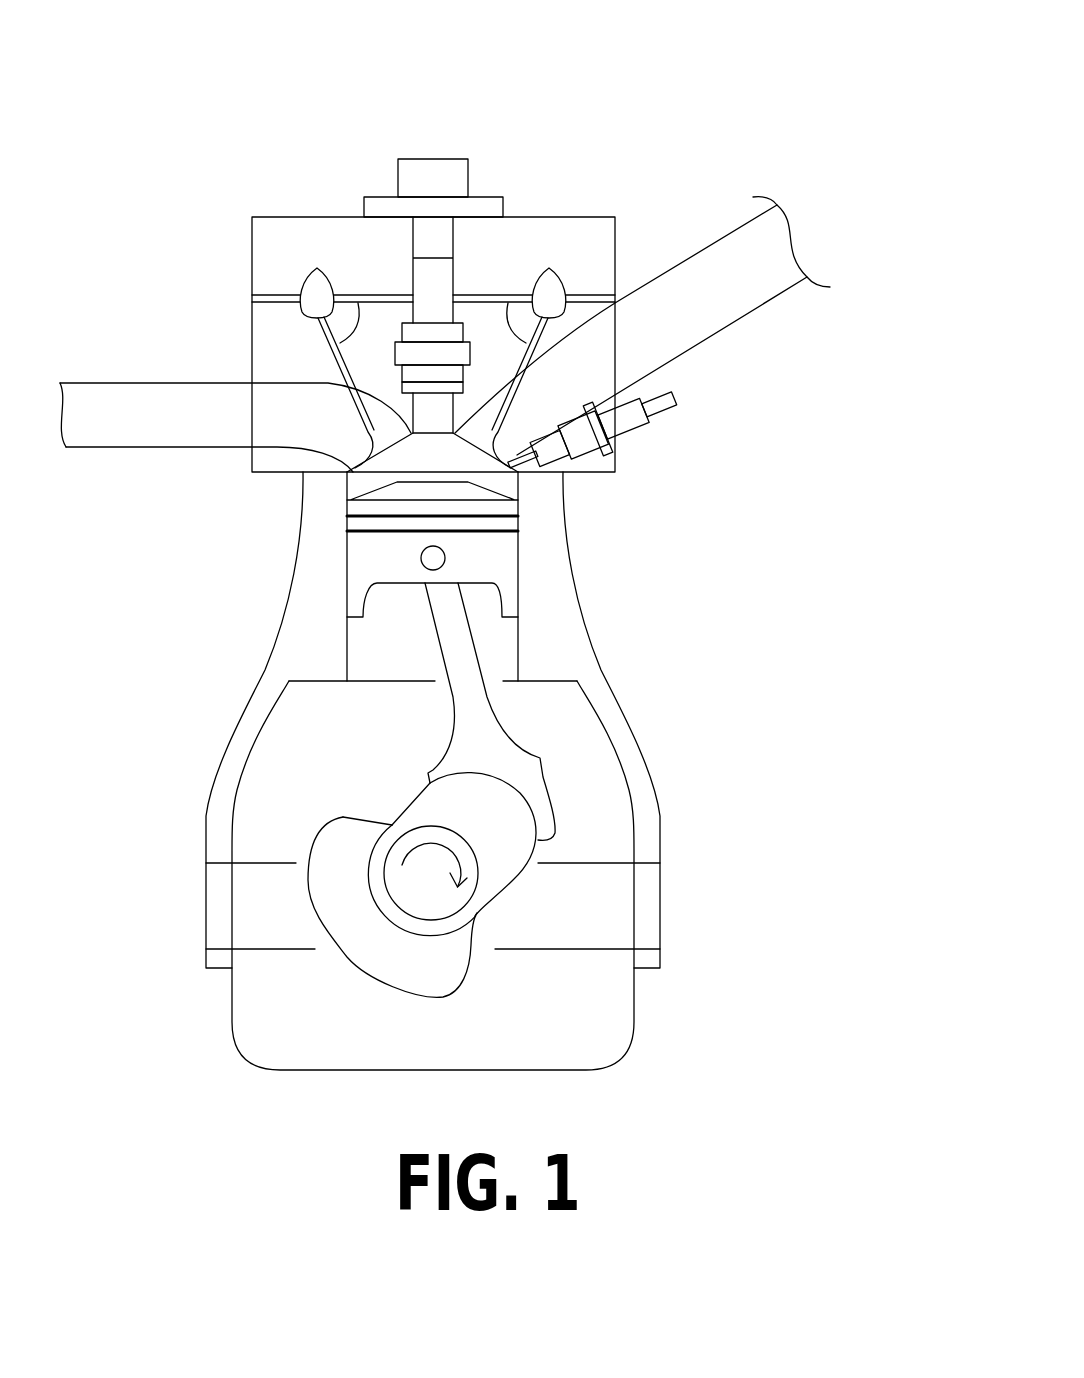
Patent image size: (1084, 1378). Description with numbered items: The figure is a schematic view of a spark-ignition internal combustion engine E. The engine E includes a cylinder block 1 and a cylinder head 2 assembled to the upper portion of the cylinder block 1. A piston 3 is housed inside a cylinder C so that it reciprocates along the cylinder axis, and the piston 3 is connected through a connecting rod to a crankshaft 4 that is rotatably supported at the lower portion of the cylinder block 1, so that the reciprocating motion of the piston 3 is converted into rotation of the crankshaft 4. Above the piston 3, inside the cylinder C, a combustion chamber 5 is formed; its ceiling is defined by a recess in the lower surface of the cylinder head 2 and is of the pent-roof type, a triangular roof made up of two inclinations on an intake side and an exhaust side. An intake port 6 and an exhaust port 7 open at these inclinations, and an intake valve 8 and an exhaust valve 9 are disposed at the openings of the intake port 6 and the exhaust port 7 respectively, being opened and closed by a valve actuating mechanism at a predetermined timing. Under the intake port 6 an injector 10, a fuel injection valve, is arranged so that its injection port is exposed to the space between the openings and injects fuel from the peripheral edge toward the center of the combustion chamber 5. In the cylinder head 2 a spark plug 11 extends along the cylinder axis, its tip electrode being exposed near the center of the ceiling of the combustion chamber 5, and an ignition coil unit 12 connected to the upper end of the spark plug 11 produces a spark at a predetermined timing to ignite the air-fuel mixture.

The cylinder block 1 is at (268, 659).
The cylinder head 2 is at (251, 322).
The piston 3 is at (362, 552).
The crankshaft 4 is at (345, 955).
The combustion chamber 5 is at (473, 463).
The intake port 6 is at (595, 327).
The exhaust port 7 is at (288, 447).
The intake valve 8 is at (516, 313).
The exhaust valve 9 is at (360, 307).
The injector 10 is at (613, 473).
The spark plug 11 is at (410, 275).
The ignition coil unit 12 is at (433, 158).
The cylinder C is at (347, 652).
The engine E is at (757, 775).